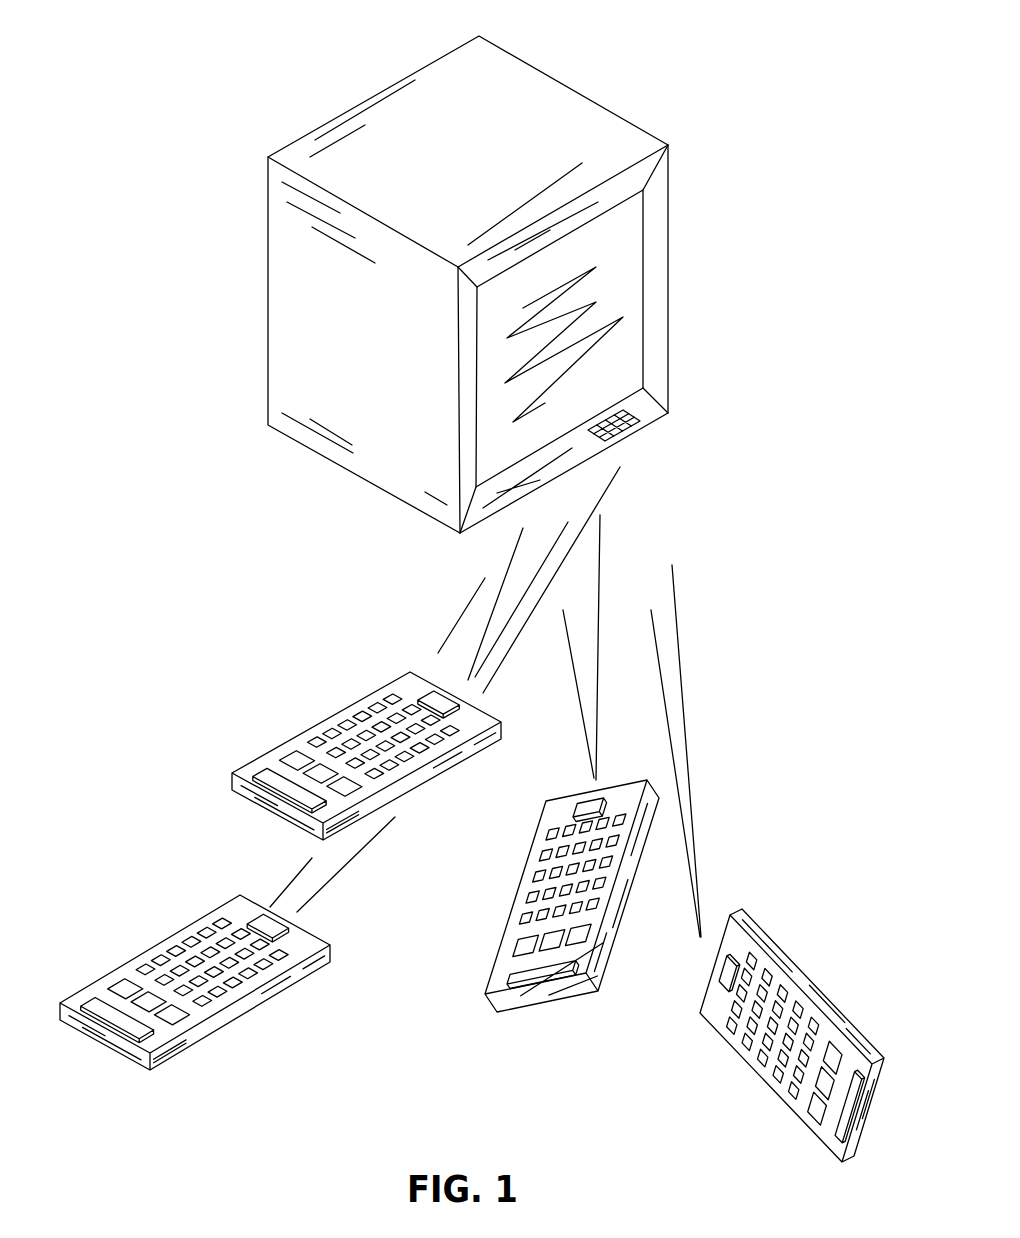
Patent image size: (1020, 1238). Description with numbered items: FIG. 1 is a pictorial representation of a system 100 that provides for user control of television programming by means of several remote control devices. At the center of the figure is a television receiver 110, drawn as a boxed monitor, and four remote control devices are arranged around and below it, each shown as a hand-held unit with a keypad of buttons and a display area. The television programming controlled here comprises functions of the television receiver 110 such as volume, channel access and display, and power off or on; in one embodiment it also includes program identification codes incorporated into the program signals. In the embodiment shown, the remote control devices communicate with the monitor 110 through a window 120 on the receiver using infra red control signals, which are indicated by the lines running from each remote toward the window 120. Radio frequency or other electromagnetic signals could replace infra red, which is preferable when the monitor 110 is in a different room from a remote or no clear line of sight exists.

The system 100 is at (188, 287).
The television receiver 110 is at (669, 272).
The window 120 is at (632, 432).